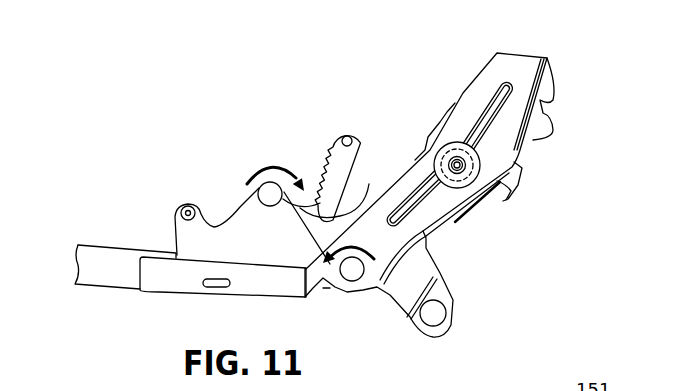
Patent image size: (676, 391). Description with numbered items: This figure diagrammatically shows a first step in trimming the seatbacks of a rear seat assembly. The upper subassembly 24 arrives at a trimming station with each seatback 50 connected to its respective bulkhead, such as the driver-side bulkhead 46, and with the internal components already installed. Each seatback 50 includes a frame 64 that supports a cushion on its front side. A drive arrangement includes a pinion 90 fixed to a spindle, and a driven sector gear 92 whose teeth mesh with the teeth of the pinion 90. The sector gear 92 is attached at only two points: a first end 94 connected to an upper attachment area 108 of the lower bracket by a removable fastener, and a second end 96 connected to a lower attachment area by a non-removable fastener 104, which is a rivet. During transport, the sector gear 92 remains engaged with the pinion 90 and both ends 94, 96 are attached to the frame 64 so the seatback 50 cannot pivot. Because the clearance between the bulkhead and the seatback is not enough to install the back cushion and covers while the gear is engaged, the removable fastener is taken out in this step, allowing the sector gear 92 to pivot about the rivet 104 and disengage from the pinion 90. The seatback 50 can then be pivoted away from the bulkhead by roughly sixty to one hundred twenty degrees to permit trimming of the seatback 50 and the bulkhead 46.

The upper subassembly 24 is at (320, 58).
The driver-side bulkhead 46 is at (518, 72).
The seatback 50 is at (100, 253).
The frame 64 is at (105, 280).
The pinion 90 is at (478, 202).
The sector gear 92 is at (339, 189).
The first end 94 is at (346, 124).
The second end 96 is at (273, 167).
The non-removable fastener 104 is at (268, 194).
The upper attachment area 108 is at (176, 212).